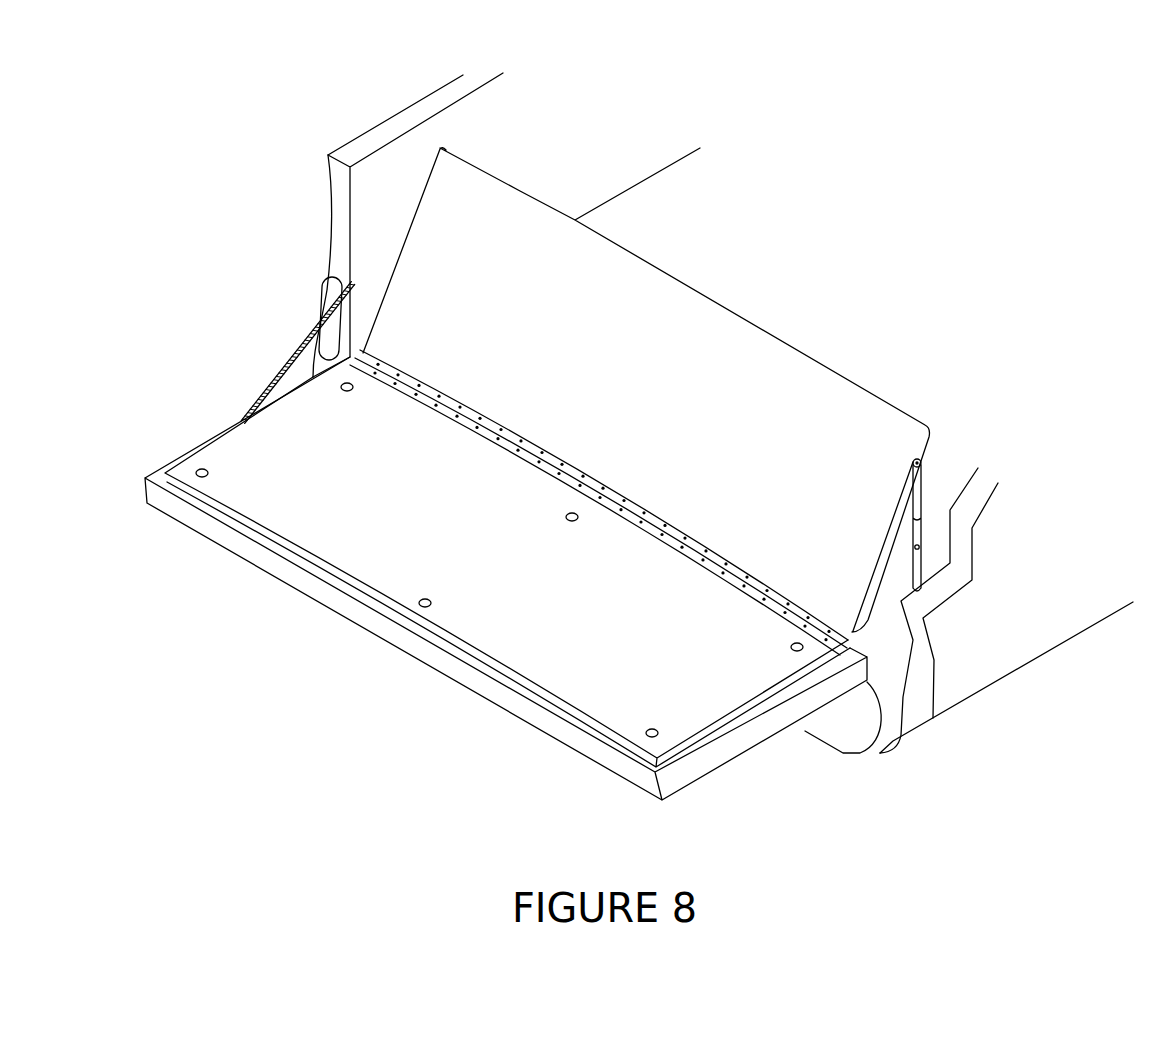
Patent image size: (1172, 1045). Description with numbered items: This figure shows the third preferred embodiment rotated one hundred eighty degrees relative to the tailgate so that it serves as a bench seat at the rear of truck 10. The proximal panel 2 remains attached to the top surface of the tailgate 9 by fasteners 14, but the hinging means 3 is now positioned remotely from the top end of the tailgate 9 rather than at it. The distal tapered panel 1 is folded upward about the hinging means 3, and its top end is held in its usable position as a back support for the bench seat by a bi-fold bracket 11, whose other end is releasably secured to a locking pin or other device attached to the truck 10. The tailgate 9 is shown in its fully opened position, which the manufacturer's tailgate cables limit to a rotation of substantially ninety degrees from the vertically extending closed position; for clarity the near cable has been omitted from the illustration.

The distal tapered panel 1 is at (700, 373).
The proximal panel 2 is at (325, 513).
The hinging means 3 is at (688, 540).
The tailgate 9 is at (612, 760).
The truck 10 is at (1053, 630).
The bi-fold bracket 11 is at (920, 503).
The fasteners 14 is at (419, 609).